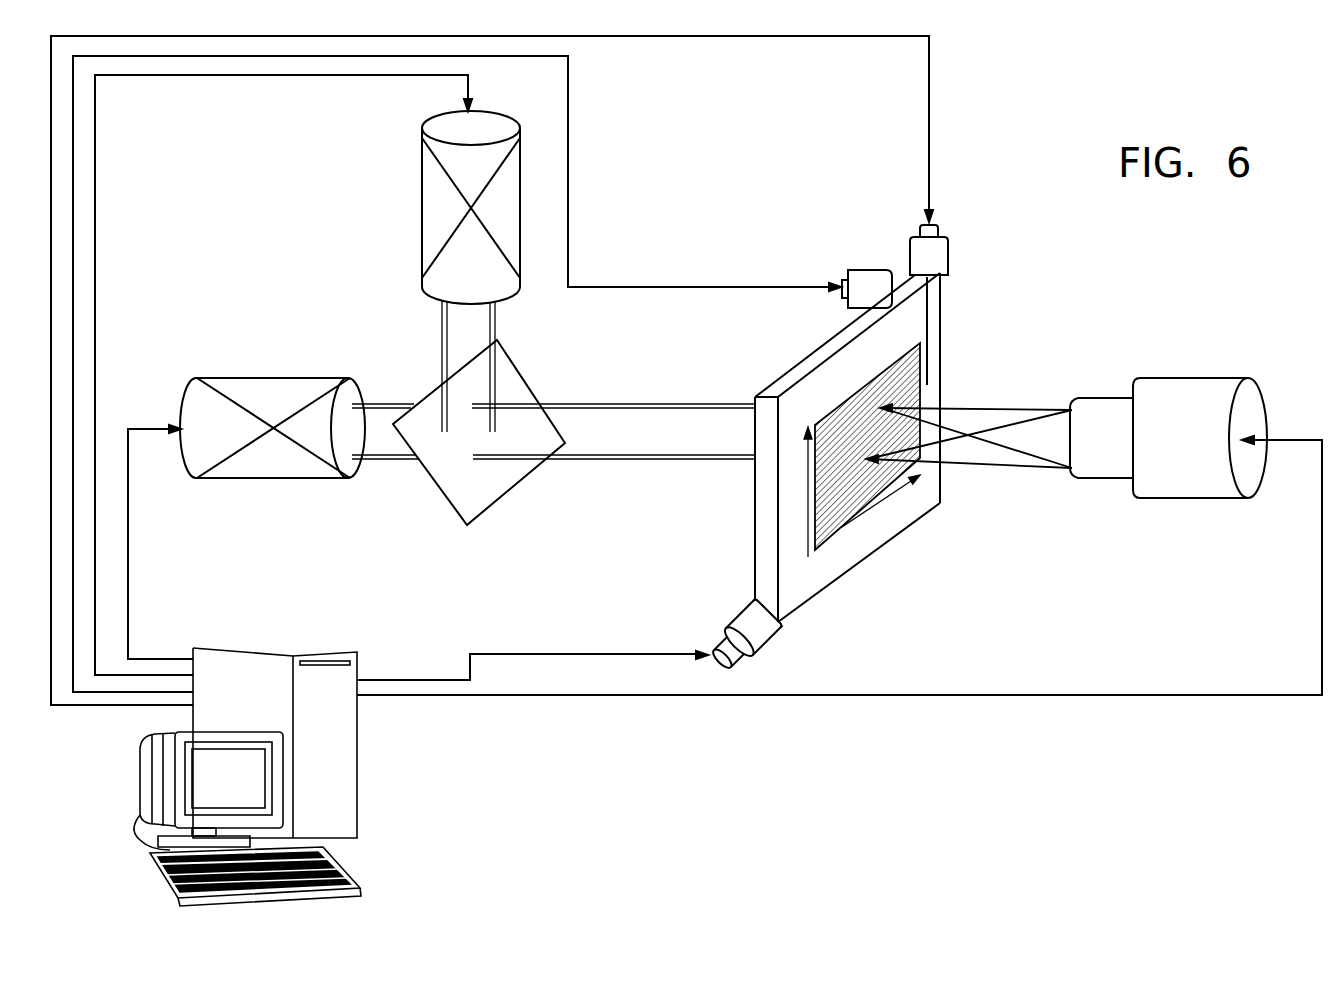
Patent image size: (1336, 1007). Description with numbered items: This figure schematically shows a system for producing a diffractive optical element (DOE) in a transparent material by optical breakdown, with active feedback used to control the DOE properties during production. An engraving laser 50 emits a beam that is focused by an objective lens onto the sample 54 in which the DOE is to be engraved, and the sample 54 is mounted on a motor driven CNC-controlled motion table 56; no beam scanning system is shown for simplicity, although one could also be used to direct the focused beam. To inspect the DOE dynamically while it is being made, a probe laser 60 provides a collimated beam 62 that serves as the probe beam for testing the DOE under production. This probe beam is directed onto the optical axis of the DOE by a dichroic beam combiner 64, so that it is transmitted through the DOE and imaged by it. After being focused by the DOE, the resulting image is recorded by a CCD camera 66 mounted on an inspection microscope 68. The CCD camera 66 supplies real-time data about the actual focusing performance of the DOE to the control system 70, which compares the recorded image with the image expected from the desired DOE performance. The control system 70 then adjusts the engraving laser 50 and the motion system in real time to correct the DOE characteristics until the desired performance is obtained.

The engraving laser 50 is at (282, 380).
The sample 54 is at (928, 384).
The motion table 56 is at (838, 568).
The probe laser 60 is at (430, 227).
The collimated beam 62 is at (441, 350).
The dichroic beam combiner 64 is at (460, 502).
The CCD camera 66 is at (1108, 417).
The inspection microscope 68 is at (1184, 470).
The control system 70 is at (272, 648).